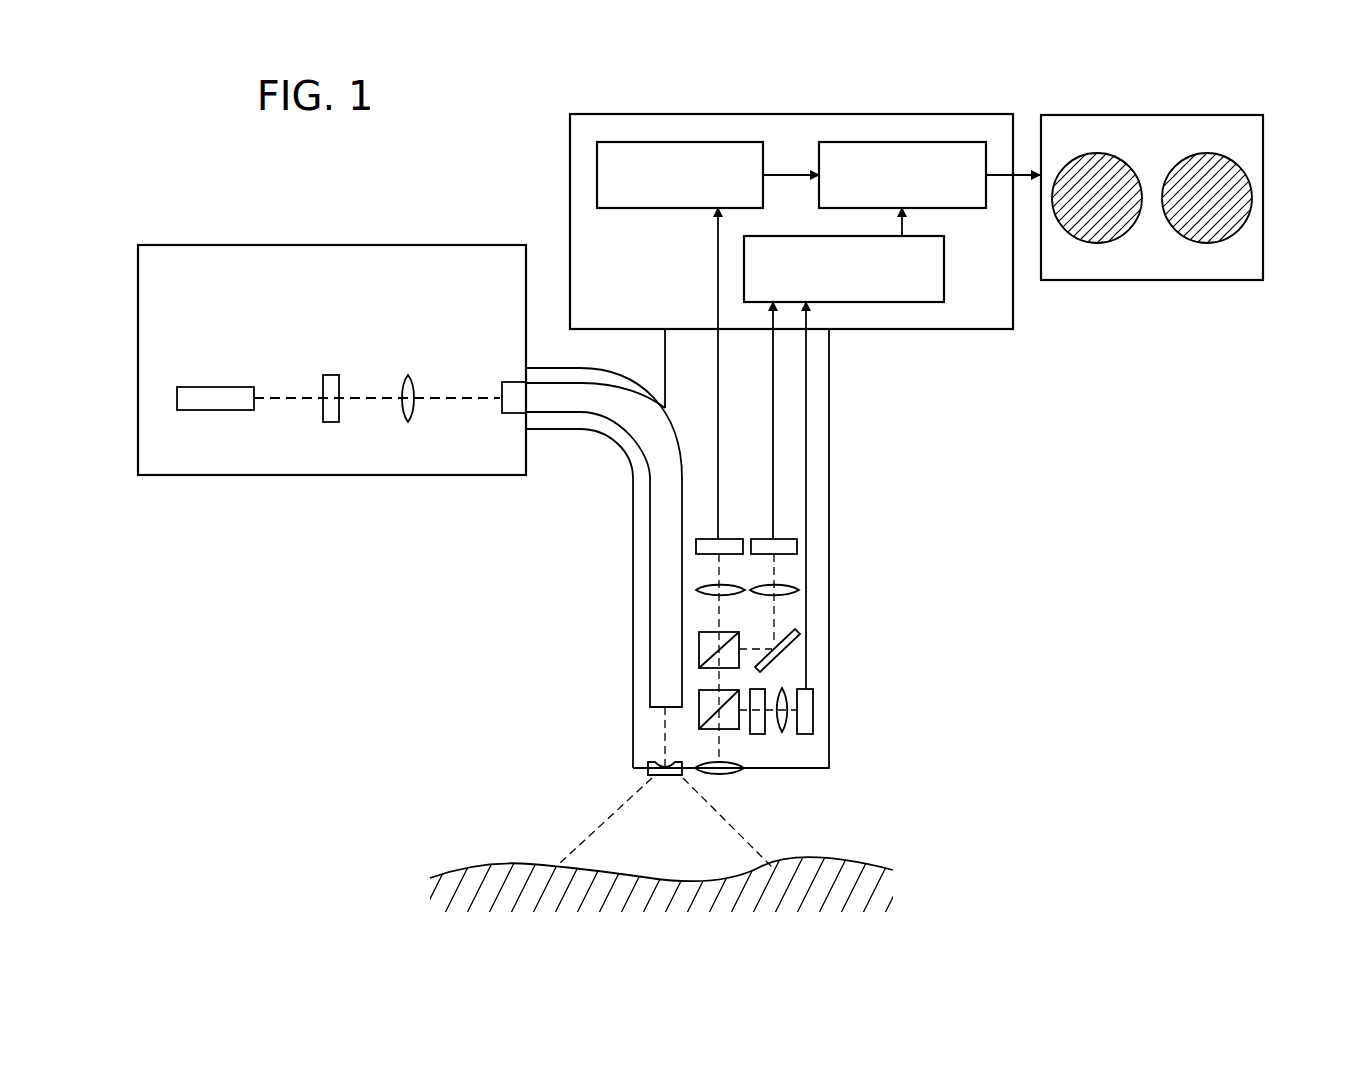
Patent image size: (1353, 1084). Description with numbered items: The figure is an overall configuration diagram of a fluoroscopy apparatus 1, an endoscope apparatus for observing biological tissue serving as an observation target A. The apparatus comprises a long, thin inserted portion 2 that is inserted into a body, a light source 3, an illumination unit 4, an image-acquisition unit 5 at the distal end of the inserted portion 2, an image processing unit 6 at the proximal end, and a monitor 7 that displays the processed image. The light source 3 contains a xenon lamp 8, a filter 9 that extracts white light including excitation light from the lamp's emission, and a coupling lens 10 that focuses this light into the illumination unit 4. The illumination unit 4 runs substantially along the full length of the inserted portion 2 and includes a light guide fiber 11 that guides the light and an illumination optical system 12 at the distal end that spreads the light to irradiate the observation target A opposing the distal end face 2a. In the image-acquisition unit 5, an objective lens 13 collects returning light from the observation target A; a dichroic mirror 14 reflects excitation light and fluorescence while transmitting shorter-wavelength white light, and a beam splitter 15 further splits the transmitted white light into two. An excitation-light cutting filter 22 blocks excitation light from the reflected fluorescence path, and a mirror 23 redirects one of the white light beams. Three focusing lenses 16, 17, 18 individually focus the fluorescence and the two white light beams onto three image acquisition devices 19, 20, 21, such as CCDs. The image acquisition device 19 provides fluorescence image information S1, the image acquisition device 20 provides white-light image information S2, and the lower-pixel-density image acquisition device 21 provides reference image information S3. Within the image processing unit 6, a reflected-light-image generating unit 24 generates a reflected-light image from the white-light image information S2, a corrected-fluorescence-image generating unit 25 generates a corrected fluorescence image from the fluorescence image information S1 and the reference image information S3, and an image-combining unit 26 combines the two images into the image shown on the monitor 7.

The fluoroscopy apparatus 1 is at (1022, 515).
The inserted portion 2 is at (829, 553).
The distal end face 2a is at (817, 770).
The light source 3 is at (340, 245).
The illumination unit 4 is at (556, 637).
The image-acquisition unit 5 is at (878, 670).
The image processing unit 6 is at (570, 131).
The monitor 7 is at (1247, 282).
The xenon lamp 8 is at (218, 387).
The filter 9 is at (330, 375).
The coupling lens 10 is at (407, 375).
The light guide fiber 11 is at (650, 655).
The illumination optical system 12 is at (648, 762).
The objective lens 13 is at (735, 776).
The dichroic mirror 14 is at (699, 718).
The beam splitter 15 is at (699, 640).
The focusing lens 16 is at (790, 735).
The focusing lens 17 is at (700, 590).
The focusing lens 18 is at (795, 590).
The image acquisition device 19 is at (813, 712).
The image acquisition device 20 is at (733, 538).
The image acquisition device 21 is at (785, 538).
The excitation-light cutting filter 22 is at (760, 735).
The mirror 23 is at (797, 648).
The reflected-light-image generating unit 24 is at (632, 210).
The corrected-fluorescence-image generating unit 25 is at (915, 303).
The image-combining unit 26 is at (900, 142).
The fluorescence image information S1 is at (806, 382).
The white-light image information S2 is at (718, 360).
The reference image information S3 is at (773, 418).
The observation target A is at (878, 868).